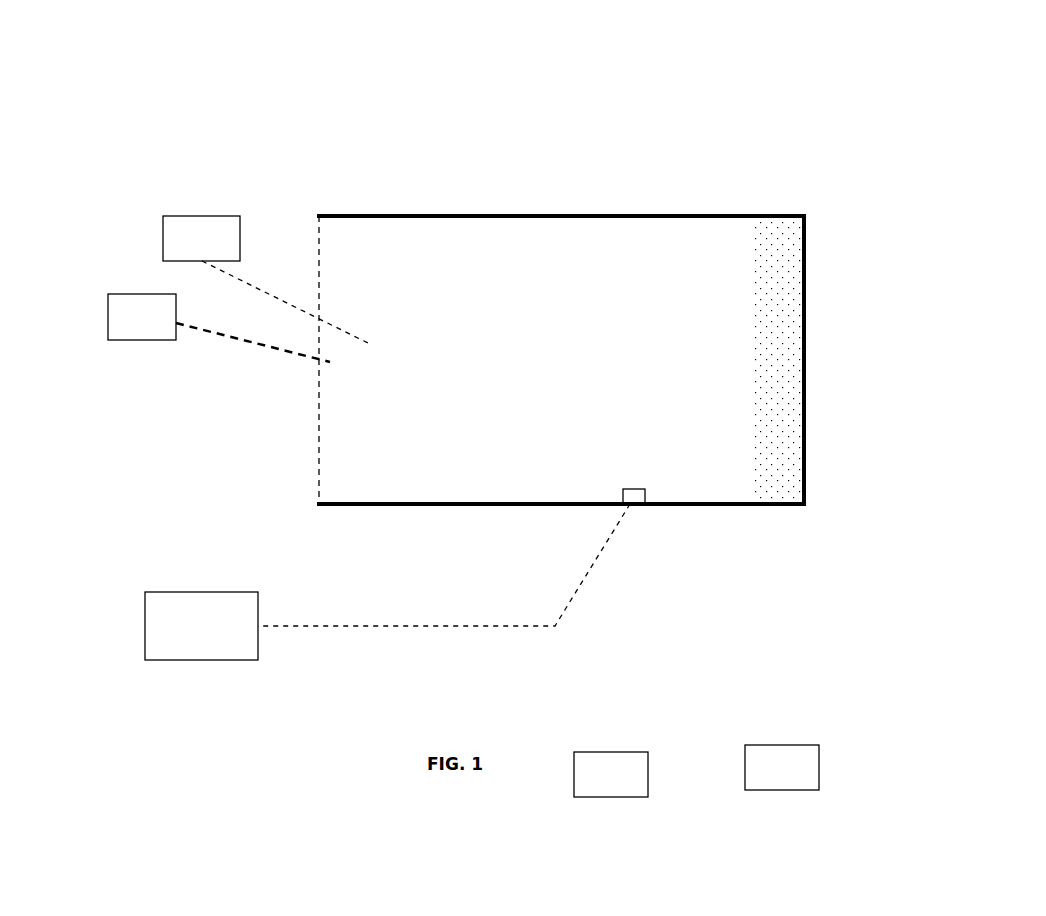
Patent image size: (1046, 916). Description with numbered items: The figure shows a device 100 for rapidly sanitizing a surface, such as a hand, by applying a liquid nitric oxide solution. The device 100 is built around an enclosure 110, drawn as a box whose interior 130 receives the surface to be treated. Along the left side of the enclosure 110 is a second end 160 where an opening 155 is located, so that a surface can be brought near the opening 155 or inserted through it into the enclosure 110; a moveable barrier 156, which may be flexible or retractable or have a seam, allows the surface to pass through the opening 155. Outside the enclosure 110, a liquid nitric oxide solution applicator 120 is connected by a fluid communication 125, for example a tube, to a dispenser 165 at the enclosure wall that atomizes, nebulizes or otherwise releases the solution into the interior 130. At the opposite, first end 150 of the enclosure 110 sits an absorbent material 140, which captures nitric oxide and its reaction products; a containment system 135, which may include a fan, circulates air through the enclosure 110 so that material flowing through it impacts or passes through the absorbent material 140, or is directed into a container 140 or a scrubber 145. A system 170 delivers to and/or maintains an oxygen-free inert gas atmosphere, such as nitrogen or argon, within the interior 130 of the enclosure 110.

The device 100 is at (781, 62).
The enclosure 110 is at (649, 216).
The liquid nitric oxide solution applicator 120 is at (212, 641).
The fluid communication 125 is at (525, 627).
The interior 130 is at (603, 277).
The containment system 135 is at (194, 233).
The absorbent material 140 is at (773, 284).
The scrubber 145 is at (735, 488).
The first end 150 is at (806, 473).
The opening 155 is at (300, 378).
The moveable barrier 156 is at (316, 418).
The second end 160 is at (319, 216).
The dispenser 165 is at (635, 504).
The system to deliver and/or maintain an oxygen-free inert gas atmosphere 170 is at (132, 311).